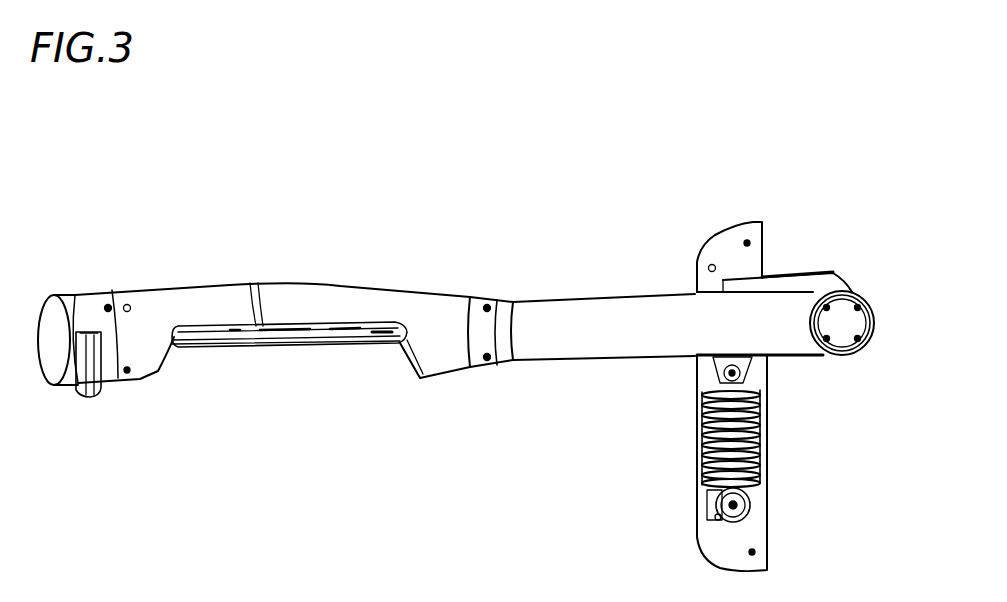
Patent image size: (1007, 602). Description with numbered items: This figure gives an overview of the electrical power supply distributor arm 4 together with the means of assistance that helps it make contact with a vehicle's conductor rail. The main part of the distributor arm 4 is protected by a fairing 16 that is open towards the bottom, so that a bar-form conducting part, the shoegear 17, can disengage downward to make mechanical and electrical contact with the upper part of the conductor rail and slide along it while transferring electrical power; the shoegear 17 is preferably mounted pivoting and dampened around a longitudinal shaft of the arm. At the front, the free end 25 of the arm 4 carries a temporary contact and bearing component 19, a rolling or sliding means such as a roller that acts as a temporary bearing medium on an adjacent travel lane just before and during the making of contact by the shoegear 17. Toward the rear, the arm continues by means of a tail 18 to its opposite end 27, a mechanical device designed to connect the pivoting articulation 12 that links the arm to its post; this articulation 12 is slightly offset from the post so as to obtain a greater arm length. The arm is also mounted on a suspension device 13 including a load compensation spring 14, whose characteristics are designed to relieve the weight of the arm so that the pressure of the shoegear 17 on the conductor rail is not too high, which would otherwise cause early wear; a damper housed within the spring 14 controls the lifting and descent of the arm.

The distributor arm 4 is at (397, 176).
The pivoting articulation 12 is at (840, 322).
The suspension device 13 is at (672, 438).
The load compensation spring 14 is at (760, 432).
The fairing 16 is at (352, 292).
The conducting part (shoegear) 17 is at (265, 362).
The tail 18 is at (627, 318).
The temporary contact and bearing component 19 is at (90, 387).
The free end 25 is at (105, 258).
The opposite end 27 is at (420, 256).